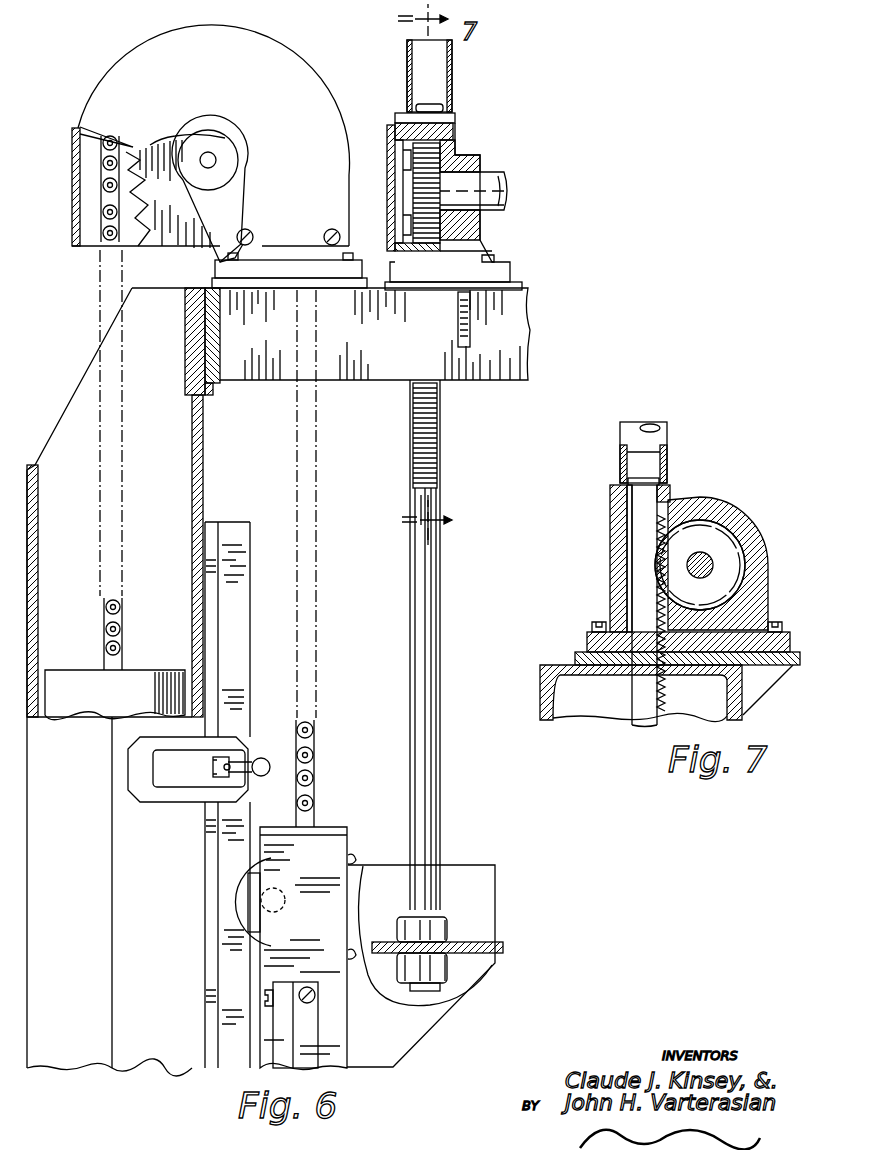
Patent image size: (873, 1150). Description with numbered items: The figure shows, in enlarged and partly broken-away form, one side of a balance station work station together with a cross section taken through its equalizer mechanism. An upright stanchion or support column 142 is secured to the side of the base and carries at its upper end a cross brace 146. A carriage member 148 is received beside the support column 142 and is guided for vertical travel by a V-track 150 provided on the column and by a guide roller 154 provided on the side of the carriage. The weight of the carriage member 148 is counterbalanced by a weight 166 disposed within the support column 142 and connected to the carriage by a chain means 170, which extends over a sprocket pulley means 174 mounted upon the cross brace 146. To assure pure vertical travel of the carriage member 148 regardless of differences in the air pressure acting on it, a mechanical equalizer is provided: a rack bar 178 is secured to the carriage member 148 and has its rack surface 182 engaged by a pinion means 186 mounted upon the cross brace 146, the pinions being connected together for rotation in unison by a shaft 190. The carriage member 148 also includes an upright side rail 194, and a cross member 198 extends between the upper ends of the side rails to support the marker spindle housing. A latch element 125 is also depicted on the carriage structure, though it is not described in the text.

In FIG. 6, the latch 125 is at (178, 778).
In FIG. 6, the support column 142 is at (100, 1052).
In FIG. 6, the cross brace 146 is at (522, 322).
In FIG. 7, the cross brace 146 is at (548, 680).
In FIG. 6, the carriage member 148 is at (460, 874).
In FIG. 6, the V-track 150 is at (232, 607).
In FIG. 6, the guide roller 154 is at (233, 900).
In FIG. 6, the weights 166 is at (107, 682).
In FIG. 6, the chain means 170 is at (122, 650).
In FIG. 6, the sprocket pulley means 174 is at (80, 128).
In FIG. 6, the rack bar 178 is at (418, 742).
In FIG. 7, the rack bar 178 is at (637, 702).
In FIG. 6, the rack surface 182 is at (435, 420).
In FIG. 7, the rack surface 182 is at (662, 690).
In FIG. 6, the pinion means 186 is at (425, 192).
In FIG. 7, the pinion means 186 is at (735, 565).
In FIG. 6, the shaft 190 is at (492, 181).
In FIG. 6, the side rail 194 is at (337, 1052).
In FIG. 6, the cross member 198 is at (480, 936).